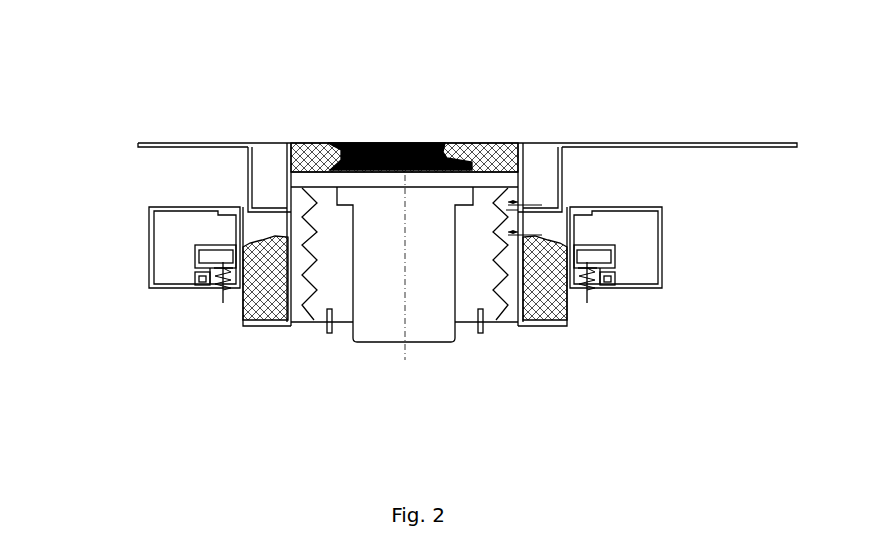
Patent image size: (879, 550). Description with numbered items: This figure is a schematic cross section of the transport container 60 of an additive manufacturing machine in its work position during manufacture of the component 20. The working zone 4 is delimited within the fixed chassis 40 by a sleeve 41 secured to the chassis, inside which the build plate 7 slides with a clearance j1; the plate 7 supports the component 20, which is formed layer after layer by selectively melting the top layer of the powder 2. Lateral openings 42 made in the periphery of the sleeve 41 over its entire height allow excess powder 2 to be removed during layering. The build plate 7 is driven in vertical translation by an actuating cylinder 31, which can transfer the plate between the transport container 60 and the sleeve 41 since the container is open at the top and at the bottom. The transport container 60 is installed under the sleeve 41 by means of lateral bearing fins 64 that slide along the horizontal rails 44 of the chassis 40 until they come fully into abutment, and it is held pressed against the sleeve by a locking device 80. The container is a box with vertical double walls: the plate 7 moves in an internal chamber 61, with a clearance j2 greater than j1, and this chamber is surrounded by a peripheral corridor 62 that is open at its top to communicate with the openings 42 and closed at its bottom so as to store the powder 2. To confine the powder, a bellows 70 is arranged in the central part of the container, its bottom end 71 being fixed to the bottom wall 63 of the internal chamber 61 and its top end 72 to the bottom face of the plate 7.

The powder 2 is at (493, 148).
The working zone 4 is at (326, 152).
The build plate 7 is at (455, 182).
The component 20 is at (388, 143).
The actuating cylinder 31 is at (420, 322).
The fixed chassis 40 is at (172, 143).
The sleeve 41 is at (520, 185).
The lateral openings 42 is at (258, 150).
The horizontal rails 44 is at (200, 277).
The transport container 60 is at (253, 337).
The internal chamber 61 is at (512, 300).
The peripheral corridor 62 is at (252, 225).
The bottom wall 63 is at (298, 323).
The lateral bearing fins 64 is at (217, 255).
The bellows 70 is at (312, 253).
The bottom end 71 is at (317, 323).
The top end 72 is at (304, 190).
The locking device 80 is at (218, 290).
The clearance j1 is at (526, 194).
The clearance j2 is at (525, 222).